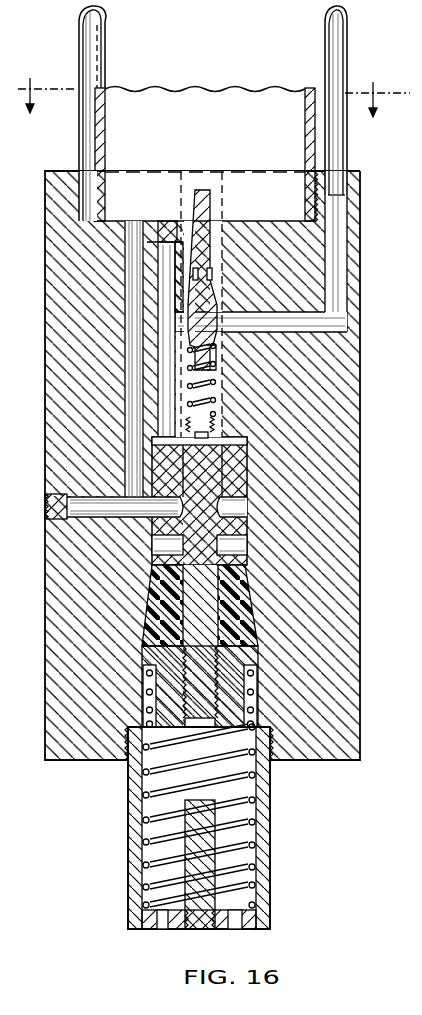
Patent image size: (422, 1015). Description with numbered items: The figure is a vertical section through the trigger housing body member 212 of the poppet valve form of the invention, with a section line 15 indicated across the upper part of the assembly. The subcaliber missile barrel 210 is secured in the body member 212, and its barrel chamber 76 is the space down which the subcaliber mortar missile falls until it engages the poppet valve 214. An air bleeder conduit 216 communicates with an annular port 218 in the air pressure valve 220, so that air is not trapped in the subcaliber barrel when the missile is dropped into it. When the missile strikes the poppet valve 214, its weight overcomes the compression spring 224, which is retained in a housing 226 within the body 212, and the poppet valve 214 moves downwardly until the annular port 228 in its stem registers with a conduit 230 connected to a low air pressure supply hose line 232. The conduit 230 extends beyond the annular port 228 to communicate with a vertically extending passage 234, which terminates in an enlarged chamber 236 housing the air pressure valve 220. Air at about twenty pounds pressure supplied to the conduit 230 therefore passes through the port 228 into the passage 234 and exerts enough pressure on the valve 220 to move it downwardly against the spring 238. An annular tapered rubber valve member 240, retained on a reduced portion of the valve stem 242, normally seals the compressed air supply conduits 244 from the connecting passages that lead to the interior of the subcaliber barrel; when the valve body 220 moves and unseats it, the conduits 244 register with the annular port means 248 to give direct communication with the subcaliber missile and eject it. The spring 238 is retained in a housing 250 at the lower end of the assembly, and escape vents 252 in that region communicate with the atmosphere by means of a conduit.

The trigger housing body member 212 is at (45, 359).
The subcaliber missile barrel 210 is at (305, 136).
The barrel chamber 76 is at (210, 135).
The compressed air supply conduits 244 is at (93, 54).
The low air pressure supply hose line 232 is at (328, 58).
The poppet valve 214 is at (207, 208).
The annular port 228 is at (197, 270).
The conduit 230 is at (237, 322).
The housing 226 is at (218, 363).
The compression spring 224 is at (216, 389).
The enlarged chamber 236 is at (237, 441).
The vertically extending passage 234 is at (167, 388).
The air bleeder conduit 216 is at (135, 451).
The air pressure valve 220 is at (249, 465).
The annular port 218 is at (237, 509).
The annular port means 248 is at (160, 548).
The annular tapered rubber valve member 240 is at (250, 595).
The valve stem 242 is at (200, 633).
The spring 238 is at (245, 832).
The housing 250 is at (272, 909).
The escape vents 252 is at (160, 920).
The section line 15- 15 is at (214, 108).